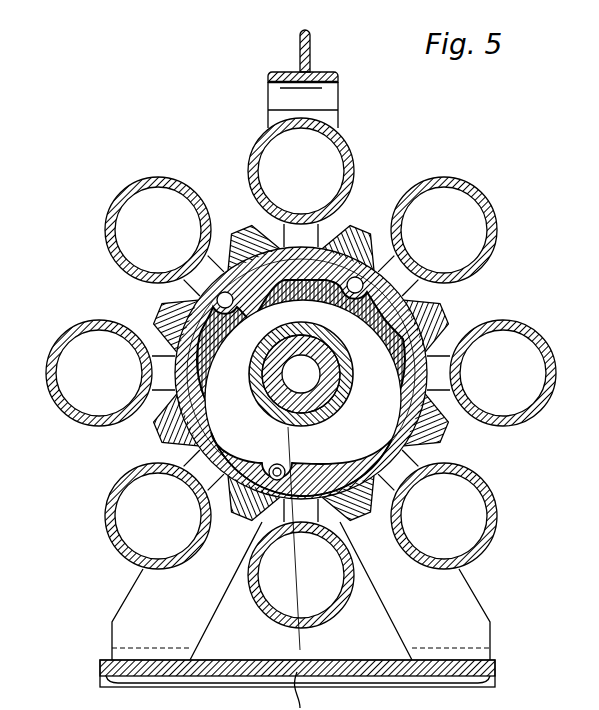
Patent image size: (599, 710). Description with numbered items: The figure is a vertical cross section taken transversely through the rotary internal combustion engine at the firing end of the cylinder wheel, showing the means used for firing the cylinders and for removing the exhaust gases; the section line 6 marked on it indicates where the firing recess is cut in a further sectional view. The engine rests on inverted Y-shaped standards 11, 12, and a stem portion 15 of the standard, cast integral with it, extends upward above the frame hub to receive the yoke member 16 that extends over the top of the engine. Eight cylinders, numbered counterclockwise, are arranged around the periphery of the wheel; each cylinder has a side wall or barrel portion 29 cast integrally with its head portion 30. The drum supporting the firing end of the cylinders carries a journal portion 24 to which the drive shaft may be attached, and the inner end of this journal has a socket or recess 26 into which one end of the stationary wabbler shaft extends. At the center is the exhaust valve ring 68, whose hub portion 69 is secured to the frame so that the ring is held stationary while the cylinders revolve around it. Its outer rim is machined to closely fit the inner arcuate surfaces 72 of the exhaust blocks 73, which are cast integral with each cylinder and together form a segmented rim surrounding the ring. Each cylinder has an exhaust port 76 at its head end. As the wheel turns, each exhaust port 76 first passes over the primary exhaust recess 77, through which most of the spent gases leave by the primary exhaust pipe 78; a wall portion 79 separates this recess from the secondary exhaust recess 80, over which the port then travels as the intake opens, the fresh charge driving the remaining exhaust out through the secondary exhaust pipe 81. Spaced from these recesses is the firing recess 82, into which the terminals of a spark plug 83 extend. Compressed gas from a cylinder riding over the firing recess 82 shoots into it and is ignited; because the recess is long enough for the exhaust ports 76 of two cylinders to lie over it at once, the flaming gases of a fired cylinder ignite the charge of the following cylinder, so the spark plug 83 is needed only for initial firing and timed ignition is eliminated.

The section line 6- 6 is at (283, 434).
The inverted Y-shaped standard 11 is at (455, 617).
The inverted Y-shaped standard 12 is at (150, 592).
The stem portion 15 is at (332, 121).
The yoke member 16 is at (312, 54).
The journal portion 24 is at (335, 387).
The socket or recess 26 is at (315, 373).
The side wall or barrel portion 29 is at (487, 200).
The head portion 30 is at (187, 183).
The exhaust valve ring 68 is at (362, 438).
The hub portion 69 is at (341, 406).
The inner arcuate surface 72 is at (442, 307).
The exhaust block 73 is at (160, 443).
The exhaust port 76 is at (200, 270).
The primary exhaust recess 77 is at (170, 295).
The primary exhaust pipe 78 is at (228, 300).
The wall portion 79 is at (237, 257).
The secondary exhaust recess 80 is at (320, 258).
The secondary exhaust pipe 81 is at (357, 296).
The firing recess 82 is at (242, 448).
The spark plug 83 is at (285, 470).